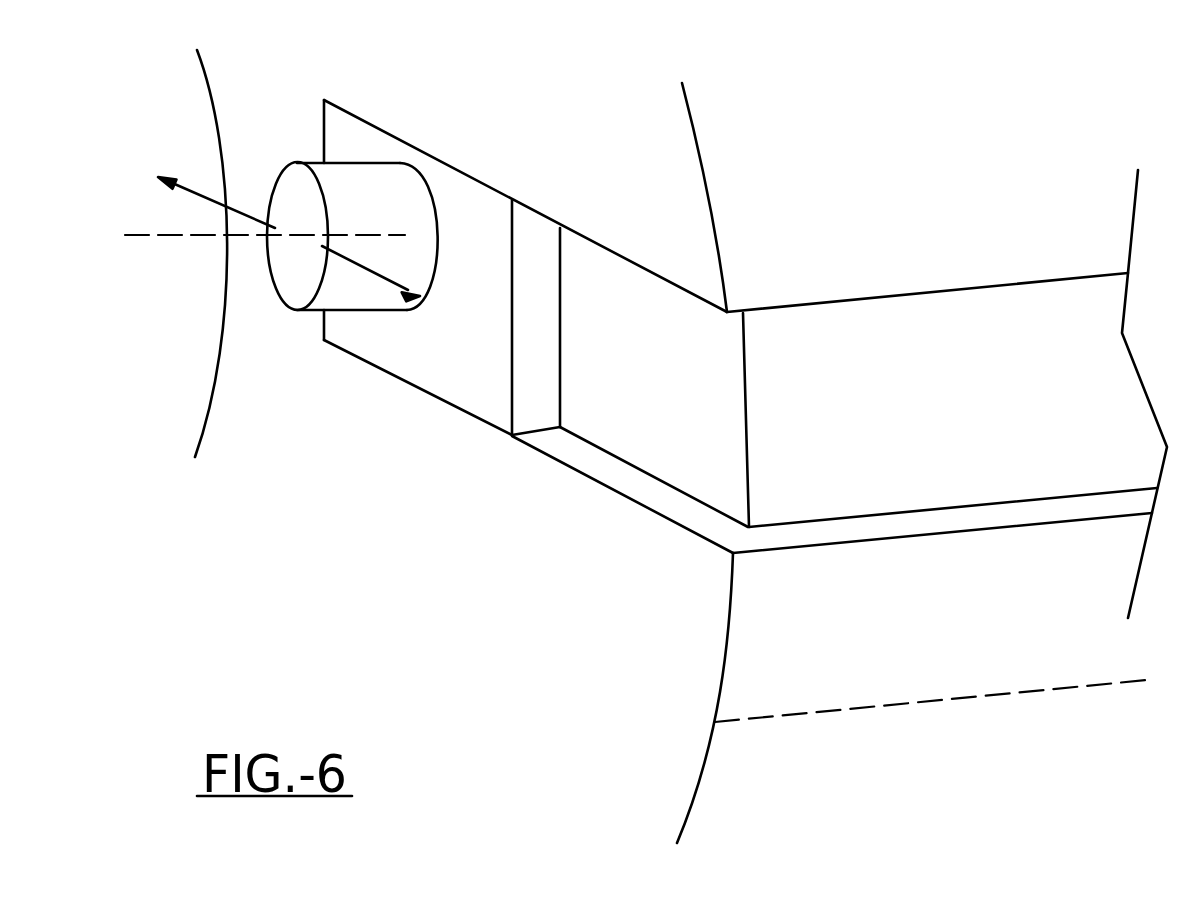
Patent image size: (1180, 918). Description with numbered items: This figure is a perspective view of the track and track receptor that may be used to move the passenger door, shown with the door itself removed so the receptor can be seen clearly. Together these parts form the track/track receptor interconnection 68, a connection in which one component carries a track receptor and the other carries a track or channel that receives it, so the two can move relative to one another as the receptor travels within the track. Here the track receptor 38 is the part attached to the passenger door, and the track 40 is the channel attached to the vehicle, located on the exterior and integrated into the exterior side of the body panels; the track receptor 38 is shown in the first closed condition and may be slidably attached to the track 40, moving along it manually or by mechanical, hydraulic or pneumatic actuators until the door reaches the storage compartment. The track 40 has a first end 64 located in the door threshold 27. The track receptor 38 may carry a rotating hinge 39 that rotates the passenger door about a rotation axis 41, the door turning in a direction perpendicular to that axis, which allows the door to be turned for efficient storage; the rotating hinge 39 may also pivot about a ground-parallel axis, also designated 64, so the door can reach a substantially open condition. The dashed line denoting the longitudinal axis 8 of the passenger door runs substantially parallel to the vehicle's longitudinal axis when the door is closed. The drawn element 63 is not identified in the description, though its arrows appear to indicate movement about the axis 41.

The longitudinal axis 8 is at (888, 703).
The door threshold 27 is at (242, 385).
The track receptor 38 is at (480, 193).
The rotating hinge 39 is at (308, 163).
The track 40 is at (892, 353).
The rotation axis 41 is at (162, 233).
The direction arrows 63 is at (205, 193).
The first end 64 is at (325, 100).
The track/track receptor interconnection 68 is at (458, 112).